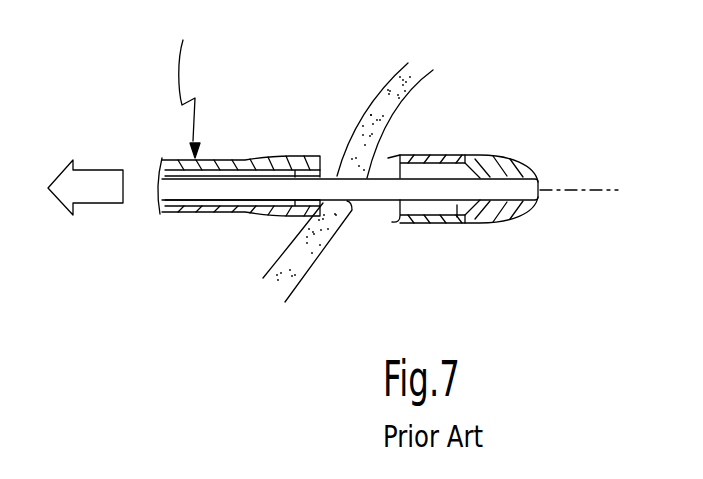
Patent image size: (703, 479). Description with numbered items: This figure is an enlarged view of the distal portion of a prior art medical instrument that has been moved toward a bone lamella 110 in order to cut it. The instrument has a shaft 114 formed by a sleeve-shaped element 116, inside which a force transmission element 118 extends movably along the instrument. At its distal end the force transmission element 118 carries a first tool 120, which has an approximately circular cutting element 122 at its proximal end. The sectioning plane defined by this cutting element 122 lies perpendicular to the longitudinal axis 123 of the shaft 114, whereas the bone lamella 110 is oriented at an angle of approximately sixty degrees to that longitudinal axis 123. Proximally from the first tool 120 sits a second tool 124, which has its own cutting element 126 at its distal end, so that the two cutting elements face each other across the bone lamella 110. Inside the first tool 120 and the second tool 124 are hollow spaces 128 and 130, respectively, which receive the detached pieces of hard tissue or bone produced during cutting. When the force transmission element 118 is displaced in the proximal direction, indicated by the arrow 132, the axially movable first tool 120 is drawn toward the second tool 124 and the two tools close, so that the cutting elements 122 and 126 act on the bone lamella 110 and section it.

The bone lamella 110 is at (400, 92).
The shaft 114 is at (193, 85).
The sleeve-shaped element 116 is at (195, 203).
The force transmission element 118 is at (187, 181).
The first tool 120 is at (507, 157).
The cutting element 122 is at (388, 157).
The longitudinal axis 123 is at (622, 190).
The second tool 124 is at (257, 204).
The cutting element 126 is at (322, 158).
The hollow space 128 is at (457, 217).
The hollow space 130 is at (291, 155).
The arrow 132 is at (100, 185).